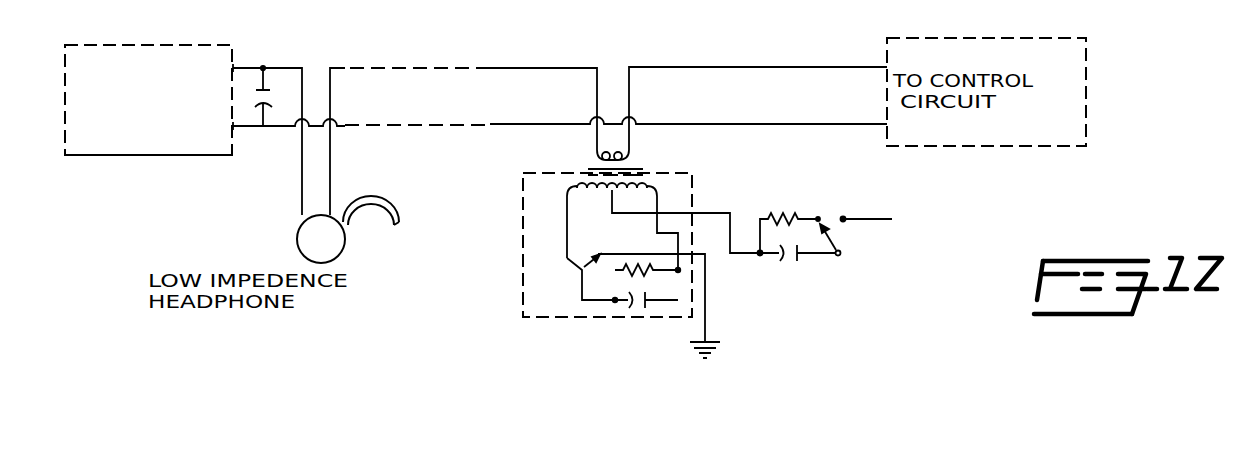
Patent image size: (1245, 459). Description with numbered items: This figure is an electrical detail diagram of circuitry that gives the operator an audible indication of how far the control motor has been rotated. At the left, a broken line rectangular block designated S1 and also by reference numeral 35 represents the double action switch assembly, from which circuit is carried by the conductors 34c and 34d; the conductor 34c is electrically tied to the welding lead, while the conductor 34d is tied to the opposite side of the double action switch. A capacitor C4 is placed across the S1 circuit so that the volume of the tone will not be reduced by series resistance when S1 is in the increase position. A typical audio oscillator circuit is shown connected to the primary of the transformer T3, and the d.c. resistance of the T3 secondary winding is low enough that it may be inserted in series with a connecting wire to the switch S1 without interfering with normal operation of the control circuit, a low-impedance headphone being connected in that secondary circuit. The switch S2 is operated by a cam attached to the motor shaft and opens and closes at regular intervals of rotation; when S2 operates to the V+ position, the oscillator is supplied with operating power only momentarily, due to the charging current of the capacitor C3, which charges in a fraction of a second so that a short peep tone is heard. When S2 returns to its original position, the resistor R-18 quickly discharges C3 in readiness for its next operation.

The conductor 34c is at (252, 126).
The conductor 34d is at (241, 68).
The broken line rectangular block 35 is at (160, 156).
The switch S1 is at (148, 100).
The capacitor C4 is at (275, 96).
The transformer T3 is at (641, 254).
The resistor R-18 is at (790, 221).
The capacitor C3 is at (797, 262).
The switch S2 is at (871, 236).